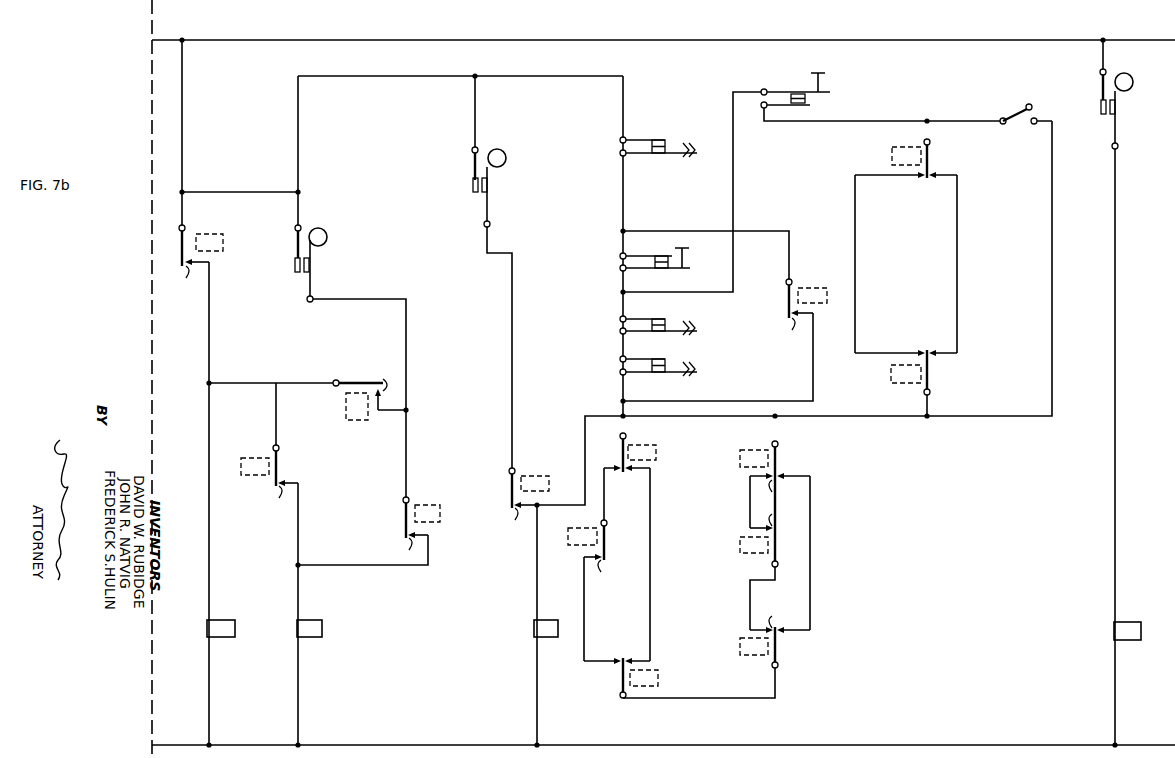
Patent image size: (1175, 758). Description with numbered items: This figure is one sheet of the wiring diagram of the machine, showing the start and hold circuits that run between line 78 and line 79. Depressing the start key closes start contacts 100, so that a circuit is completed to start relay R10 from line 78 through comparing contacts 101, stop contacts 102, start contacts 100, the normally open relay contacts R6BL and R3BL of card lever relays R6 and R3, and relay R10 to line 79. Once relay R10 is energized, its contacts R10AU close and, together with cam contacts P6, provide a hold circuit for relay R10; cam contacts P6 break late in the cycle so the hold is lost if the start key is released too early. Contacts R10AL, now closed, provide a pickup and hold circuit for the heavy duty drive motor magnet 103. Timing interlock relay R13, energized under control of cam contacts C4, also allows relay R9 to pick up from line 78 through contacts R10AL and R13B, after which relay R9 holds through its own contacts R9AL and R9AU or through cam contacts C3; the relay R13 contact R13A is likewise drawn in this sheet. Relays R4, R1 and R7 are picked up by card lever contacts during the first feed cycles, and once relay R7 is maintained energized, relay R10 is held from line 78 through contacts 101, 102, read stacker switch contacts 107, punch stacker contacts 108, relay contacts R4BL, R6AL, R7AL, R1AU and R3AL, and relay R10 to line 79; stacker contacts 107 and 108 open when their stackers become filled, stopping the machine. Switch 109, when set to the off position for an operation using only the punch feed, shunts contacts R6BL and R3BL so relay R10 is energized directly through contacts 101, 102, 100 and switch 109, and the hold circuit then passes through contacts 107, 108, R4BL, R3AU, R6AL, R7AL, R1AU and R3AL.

The line 78 is at (551, 42).
The line 79 is at (765, 747).
The start contacts 100 is at (806, 100).
The comparing contacts 101 is at (667, 148).
The stop contacts 102 is at (668, 262).
The heavy duty drive motor magnet 103 is at (220, 620).
The read stacker switch contacts 107 is at (667, 327).
The punch stacker contacts 108 is at (667, 367).
The switch 109 is at (1001, 120).
The relay R1 is at (756, 553).
The card lever relay R3 is at (580, 528).
The relay R4 is at (636, 445).
The card lever relay R6 is at (658, 678).
The relay R7 is at (757, 655).
The relay R9 is at (346, 405).
The start relay R10 is at (210, 240).
The timing interlock relay R13 is at (262, 458).
The cam contacts C3 is at (296, 274).
The cam contacts C4 is at (1101, 116).
The cam contacts P6 is at (474, 196).
The relay contacts R10AL is at (182, 262).
The relay contacts R9AU is at (360, 388).
The relay contacts R13B is at (265, 476).
The relay contacts R9AL is at (396, 530).
The relay contacts R10AU is at (501, 499).
The relay contacts R13A is at (785, 310).
The relay contacts R6BL is at (920, 181).
The relay contacts R3BL is at (917, 350).
The relay contacts R4BL is at (625, 474).
The relay contacts R3AU is at (614, 550).
The relay contacts R6AL is at (628, 658).
The relay contacts R3AL is at (780, 471).
The relay contacts R1AU is at (777, 523).
The relay contacts R7AL is at (780, 634).